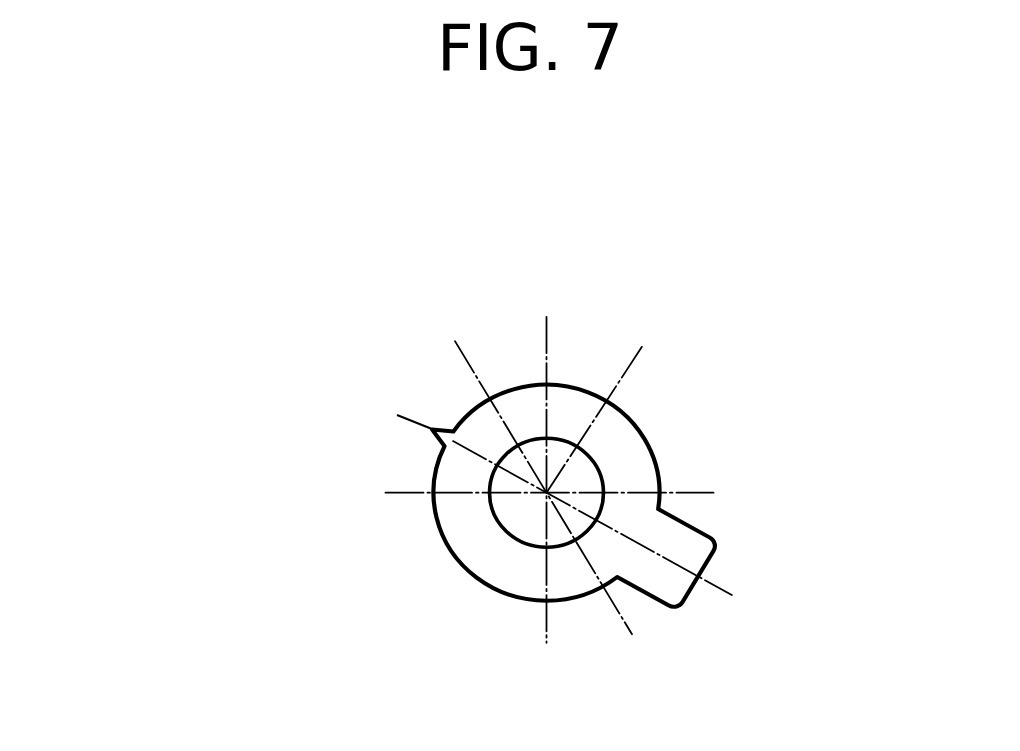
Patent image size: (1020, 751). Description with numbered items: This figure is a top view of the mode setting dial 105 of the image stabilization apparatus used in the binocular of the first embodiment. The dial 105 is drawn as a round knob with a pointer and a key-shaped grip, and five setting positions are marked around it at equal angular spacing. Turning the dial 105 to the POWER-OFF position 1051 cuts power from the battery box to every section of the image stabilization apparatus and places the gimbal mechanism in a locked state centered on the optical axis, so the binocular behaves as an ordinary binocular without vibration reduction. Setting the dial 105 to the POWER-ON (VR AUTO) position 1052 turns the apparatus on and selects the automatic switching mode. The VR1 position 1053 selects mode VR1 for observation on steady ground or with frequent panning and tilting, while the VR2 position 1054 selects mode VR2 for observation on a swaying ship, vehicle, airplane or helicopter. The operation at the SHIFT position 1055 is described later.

The mode setting dial 105 is at (757, 425).
The POWER-OFF position 1051 is at (173, 492).
The POWER-ON (VR AUTO) position 1052 is at (220, 387).
The VR1 position 1053 is at (428, 302).
The VR2 position 1054 is at (547, 283).
The SHIFT position 1055 is at (663, 307).